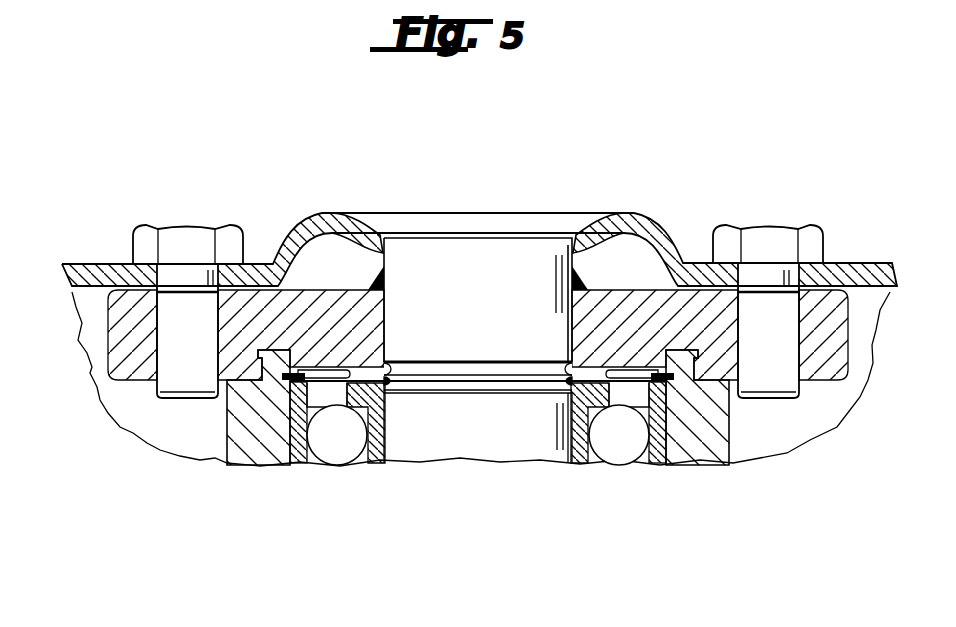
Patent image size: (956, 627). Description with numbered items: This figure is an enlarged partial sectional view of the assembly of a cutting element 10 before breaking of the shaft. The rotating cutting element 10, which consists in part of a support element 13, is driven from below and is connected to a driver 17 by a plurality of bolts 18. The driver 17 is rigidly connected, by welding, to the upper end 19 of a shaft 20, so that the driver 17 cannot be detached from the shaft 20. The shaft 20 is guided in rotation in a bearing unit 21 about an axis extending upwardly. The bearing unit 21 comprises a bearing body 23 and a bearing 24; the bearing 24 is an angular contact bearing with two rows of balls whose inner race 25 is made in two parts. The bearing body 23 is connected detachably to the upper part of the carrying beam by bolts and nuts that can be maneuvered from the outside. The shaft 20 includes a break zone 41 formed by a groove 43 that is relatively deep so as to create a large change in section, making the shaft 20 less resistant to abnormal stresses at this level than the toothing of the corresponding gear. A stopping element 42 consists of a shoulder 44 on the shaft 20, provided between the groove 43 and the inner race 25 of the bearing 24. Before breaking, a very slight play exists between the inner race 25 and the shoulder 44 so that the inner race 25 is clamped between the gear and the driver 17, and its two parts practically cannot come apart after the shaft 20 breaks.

The cutting element 10 is at (655, 208).
The support element 13 is at (302, 218).
The driver 17 is at (114, 364).
The bolts 18 is at (185, 233).
The upper end of the shaft 19 is at (423, 260).
The shaft 20 is at (546, 447).
The bearing unit 21 is at (216, 428).
The bearing body 23 is at (255, 450).
The bearing 24 is at (338, 452).
The inner race 25 is at (390, 443).
The break zone 41 is at (411, 355).
The stopping element 42 is at (432, 390).
The groove 43 is at (556, 366).
The shoulder 44 is at (528, 380).